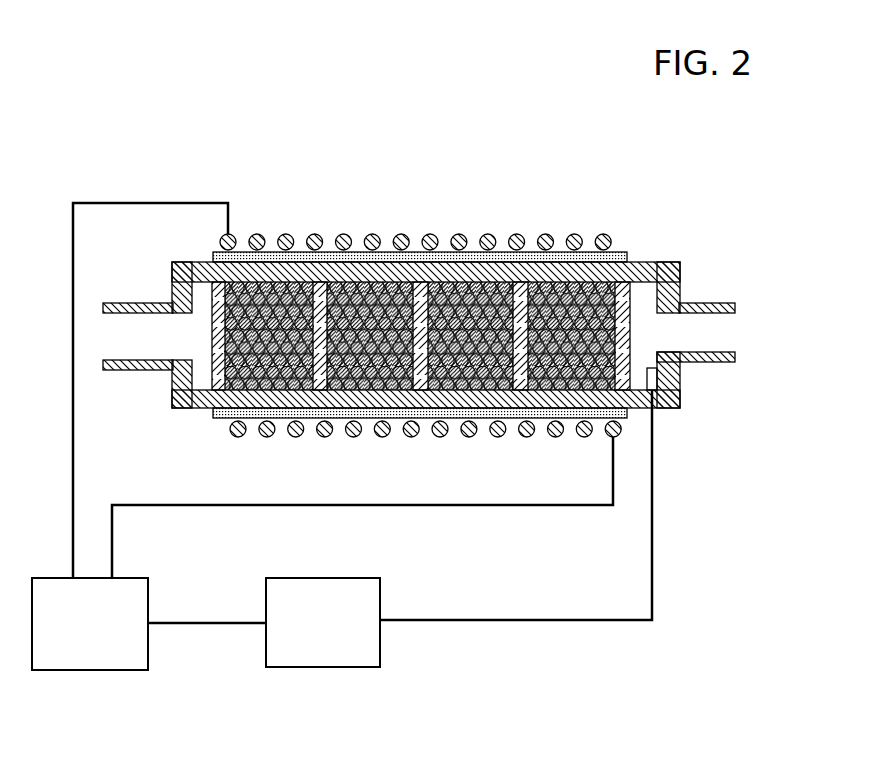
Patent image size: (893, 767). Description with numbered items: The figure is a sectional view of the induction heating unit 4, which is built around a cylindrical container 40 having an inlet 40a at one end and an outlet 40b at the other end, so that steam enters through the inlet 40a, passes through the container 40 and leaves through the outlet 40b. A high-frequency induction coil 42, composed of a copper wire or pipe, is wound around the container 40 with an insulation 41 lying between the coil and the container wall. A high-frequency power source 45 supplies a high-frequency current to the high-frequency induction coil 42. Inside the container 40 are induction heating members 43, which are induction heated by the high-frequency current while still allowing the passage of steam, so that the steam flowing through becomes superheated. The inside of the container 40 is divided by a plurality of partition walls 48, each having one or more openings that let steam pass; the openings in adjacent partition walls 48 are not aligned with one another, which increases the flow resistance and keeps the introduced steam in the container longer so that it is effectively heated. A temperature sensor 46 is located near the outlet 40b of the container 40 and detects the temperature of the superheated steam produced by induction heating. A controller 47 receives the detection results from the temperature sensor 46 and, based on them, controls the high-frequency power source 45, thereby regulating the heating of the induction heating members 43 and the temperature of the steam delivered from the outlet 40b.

The induction heating unit 4 is at (400, 124).
The cylindrical container 40 is at (664, 262).
The inlet 40a is at (128, 303).
The outlet 40b is at (738, 303).
The insulation 41 is at (625, 251).
The high-frequency induction coil 42 is at (433, 236).
The induction heating members 43 is at (455, 388).
The high-frequency power source 45 is at (108, 670).
The temperature sensor 46 is at (679, 380).
The controller 47 is at (316, 667).
The partition walls 48 is at (212, 355).